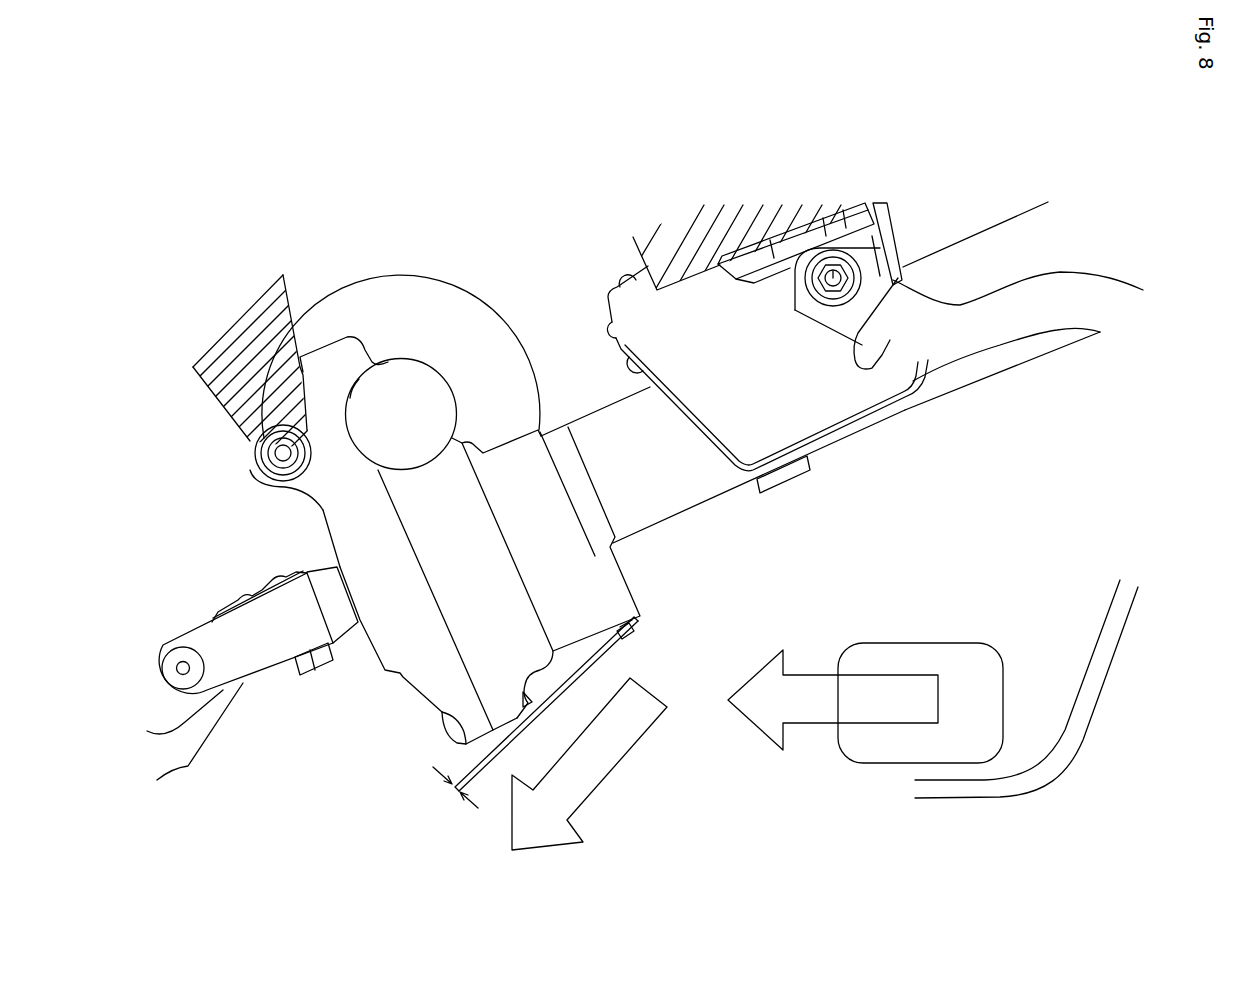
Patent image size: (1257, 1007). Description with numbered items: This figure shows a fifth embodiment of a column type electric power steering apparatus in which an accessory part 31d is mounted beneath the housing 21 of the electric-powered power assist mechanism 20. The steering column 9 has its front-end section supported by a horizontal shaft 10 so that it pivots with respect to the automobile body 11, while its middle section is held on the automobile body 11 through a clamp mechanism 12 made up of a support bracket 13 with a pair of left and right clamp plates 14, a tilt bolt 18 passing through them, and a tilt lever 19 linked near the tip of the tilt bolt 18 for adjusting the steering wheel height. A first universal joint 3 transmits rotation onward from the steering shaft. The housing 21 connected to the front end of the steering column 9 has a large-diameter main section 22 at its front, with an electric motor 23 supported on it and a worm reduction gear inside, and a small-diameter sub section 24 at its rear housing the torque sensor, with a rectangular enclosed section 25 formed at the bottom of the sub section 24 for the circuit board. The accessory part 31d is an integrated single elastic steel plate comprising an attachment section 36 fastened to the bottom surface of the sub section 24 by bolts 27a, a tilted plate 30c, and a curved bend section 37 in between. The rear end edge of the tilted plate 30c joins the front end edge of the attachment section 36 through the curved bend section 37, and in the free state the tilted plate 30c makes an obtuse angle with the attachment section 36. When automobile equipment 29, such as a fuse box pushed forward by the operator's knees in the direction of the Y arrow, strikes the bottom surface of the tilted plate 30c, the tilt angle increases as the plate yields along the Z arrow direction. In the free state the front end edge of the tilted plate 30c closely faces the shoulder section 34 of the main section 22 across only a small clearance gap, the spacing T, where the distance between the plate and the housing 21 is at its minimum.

The first universal joint 3 is at (228, 658).
The steering column 9 is at (1012, 243).
The horizontal shaft 10 is at (250, 470).
The automobile body 11 is at (240, 350).
The clamp mechanism 12 is at (902, 232).
The support bracket 13 is at (823, 390).
The clamp plates 14 is at (776, 295).
The tilt bolt 18 is at (833, 277).
The tilt lever 19 is at (1027, 317).
The electric-powered power assist mechanism 20 is at (376, 274).
The housing 21 is at (400, 583).
The main section 22 is at (468, 618).
The electric motor 23 is at (415, 307).
The sub section 24 is at (514, 452).
The enclosed section 25 is at (583, 570).
The bolts 27a is at (627, 633).
The automobile equipment 29 is at (950, 663).
The tilted plate 30c is at (610, 700).
The accessory part 31d is at (590, 650).
The shoulder section 34 is at (527, 697).
The attachment section 36 is at (637, 630).
The curved bend section 37 is at (596, 627).
The spacing T is at (453, 787).
The Y arrow Y is at (807, 727).
The Z arrow Z is at (620, 767).